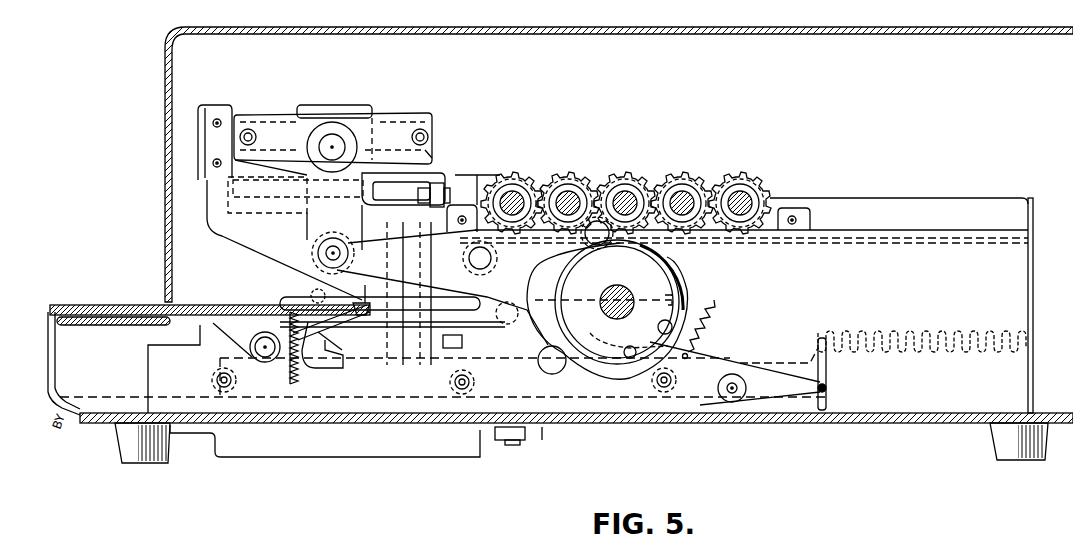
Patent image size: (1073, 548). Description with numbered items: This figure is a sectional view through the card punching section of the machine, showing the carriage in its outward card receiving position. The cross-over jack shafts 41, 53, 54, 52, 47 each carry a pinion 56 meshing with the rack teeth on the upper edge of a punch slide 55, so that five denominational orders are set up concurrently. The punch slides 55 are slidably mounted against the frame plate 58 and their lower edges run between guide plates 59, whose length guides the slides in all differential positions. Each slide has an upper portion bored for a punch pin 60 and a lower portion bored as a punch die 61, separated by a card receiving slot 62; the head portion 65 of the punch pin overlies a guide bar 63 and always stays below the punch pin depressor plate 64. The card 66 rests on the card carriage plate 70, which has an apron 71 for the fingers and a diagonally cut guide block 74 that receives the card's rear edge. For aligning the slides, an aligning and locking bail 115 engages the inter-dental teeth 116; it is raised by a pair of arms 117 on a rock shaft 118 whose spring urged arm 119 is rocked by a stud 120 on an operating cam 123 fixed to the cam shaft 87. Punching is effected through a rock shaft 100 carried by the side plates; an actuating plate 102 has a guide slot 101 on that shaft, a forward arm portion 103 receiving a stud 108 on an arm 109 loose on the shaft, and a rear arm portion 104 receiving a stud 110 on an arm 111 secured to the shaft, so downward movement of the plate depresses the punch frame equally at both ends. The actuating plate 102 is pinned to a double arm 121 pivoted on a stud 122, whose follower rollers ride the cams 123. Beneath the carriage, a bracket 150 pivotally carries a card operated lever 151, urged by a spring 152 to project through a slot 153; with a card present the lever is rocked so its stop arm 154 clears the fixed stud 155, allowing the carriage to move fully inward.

The cross-over jack shaft 41 is at (515, 200).
The cross-over jack shaft 47 is at (742, 198).
The cross-over jack shaft 52 is at (684, 197).
The cross-over jack shaft 53 is at (573, 197).
The cross-over jack shaft 54 is at (627, 197).
The punch slide 55 is at (391, 233).
The pinion 56 is at (570, 167).
The frame plate 58 is at (900, 190).
The guide plate 59 is at (598, 395).
The punch pin 60 is at (432, 268).
The punch die 61 is at (423, 354).
The card receiving slot 62 is at (494, 318).
The guide bar 63 is at (405, 203).
The punch pin depressor plate 64 is at (437, 173).
The head portion 65 is at (440, 180).
The card 66 is at (224, 303).
The card carriage plate 70 is at (101, 322).
The apron 71 is at (50, 320).
The guide block 74 is at (364, 300).
The cam shaft 87 is at (619, 301).
The rock shaft 100 is at (338, 138).
The guide slot 101 is at (323, 108).
The actuating plate 102 is at (318, 224).
The forward arm portion 103 is at (207, 180).
The rear arm portion 104 is at (434, 152).
The stud 108 is at (250, 130).
The arm 109 is at (232, 112).
The stud 110 is at (426, 135).
The arm 111 is at (384, 122).
The aligning and locking bail 115 is at (828, 368).
The inter-dental teeth 116 is at (973, 350).
The arm 117 is at (780, 397).
The rock shaft 118 is at (725, 398).
The spring urged arm 119 is at (703, 356).
The stud 120 is at (688, 302).
The double arm 121 is at (555, 254).
The stud 122 is at (493, 258).
The operating cam 123 is at (682, 282).
The bracket 150 is at (240, 334).
The card operated lever 151 is at (322, 327).
The spring 152 is at (300, 360).
The slot 153 is at (320, 303).
The stop arm 154 is at (348, 365).
The fixed stud 155 is at (462, 347).